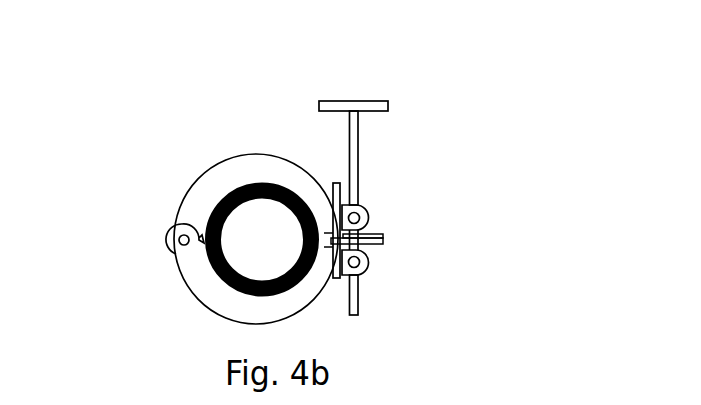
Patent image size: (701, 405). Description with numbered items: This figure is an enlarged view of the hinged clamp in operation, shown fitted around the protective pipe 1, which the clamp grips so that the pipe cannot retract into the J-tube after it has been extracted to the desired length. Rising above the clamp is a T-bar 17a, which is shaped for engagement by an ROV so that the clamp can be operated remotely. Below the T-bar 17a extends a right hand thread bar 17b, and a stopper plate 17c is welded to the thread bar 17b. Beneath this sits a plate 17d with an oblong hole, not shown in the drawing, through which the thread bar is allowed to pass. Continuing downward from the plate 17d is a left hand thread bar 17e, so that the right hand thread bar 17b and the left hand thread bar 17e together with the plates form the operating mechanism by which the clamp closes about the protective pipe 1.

The protective pipe 1 is at (250, 183).
The T-bar 17a is at (388, 100).
The right hand thread bar 17b is at (360, 173).
The stopper plate 17c is at (378, 236).
The plate with an oblong hole 17d is at (383, 241).
The left hand thread bar 17e is at (358, 313).